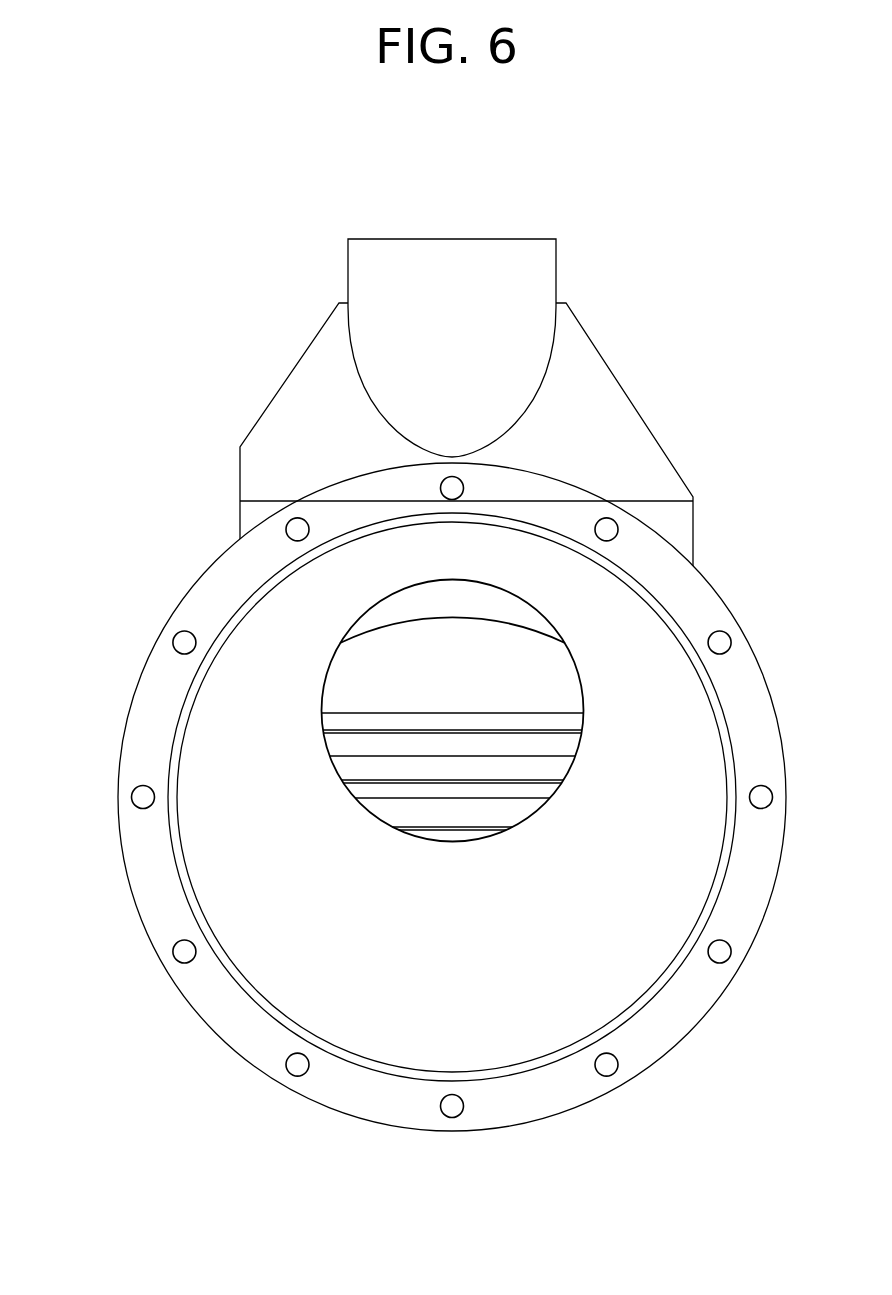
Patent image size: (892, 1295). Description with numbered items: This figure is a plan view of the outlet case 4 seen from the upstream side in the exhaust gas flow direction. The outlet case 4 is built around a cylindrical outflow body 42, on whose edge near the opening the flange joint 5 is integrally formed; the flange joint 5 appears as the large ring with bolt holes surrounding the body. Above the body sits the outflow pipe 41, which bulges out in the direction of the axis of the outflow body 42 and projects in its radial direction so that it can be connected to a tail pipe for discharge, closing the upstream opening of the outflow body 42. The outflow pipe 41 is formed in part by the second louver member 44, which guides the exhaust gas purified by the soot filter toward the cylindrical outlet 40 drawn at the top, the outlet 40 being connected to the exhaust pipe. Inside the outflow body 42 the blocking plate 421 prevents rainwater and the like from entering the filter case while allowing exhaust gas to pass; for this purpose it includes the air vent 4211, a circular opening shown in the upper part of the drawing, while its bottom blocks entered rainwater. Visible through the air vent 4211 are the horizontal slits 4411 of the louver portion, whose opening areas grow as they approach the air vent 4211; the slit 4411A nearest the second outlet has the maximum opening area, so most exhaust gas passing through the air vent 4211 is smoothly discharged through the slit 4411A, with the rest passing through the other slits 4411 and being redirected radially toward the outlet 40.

The outlet case 4 is at (663, 256).
The outlet 40 is at (495, 252).
The outflow pipe 41 is at (260, 343).
The second louver member 44 is at (602, 397).
The outflow body 42 is at (136, 588).
The flange joint 5 is at (707, 590).
The blocking plate 421 is at (625, 985).
The air vent 4211 is at (569, 655).
The slits 4411 is at (401, 660).
The slit near the second outlet 4411A is at (390, 627).